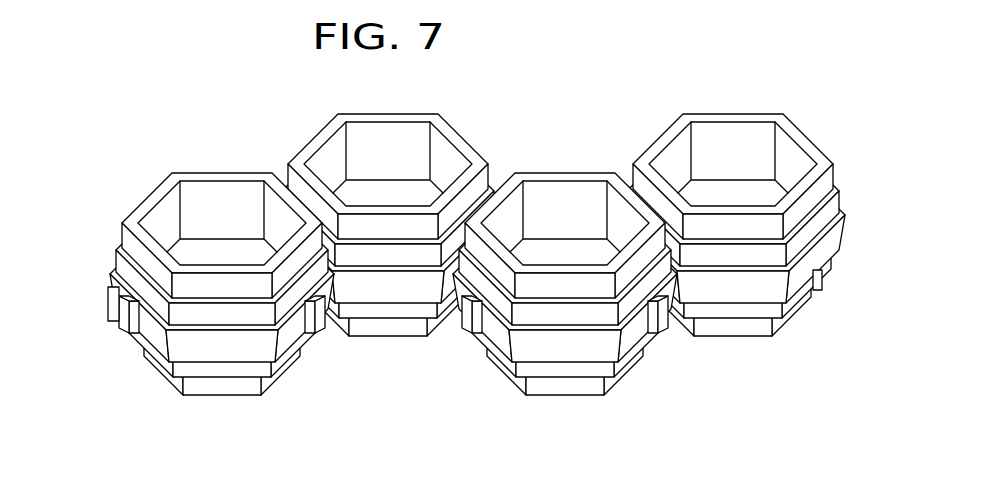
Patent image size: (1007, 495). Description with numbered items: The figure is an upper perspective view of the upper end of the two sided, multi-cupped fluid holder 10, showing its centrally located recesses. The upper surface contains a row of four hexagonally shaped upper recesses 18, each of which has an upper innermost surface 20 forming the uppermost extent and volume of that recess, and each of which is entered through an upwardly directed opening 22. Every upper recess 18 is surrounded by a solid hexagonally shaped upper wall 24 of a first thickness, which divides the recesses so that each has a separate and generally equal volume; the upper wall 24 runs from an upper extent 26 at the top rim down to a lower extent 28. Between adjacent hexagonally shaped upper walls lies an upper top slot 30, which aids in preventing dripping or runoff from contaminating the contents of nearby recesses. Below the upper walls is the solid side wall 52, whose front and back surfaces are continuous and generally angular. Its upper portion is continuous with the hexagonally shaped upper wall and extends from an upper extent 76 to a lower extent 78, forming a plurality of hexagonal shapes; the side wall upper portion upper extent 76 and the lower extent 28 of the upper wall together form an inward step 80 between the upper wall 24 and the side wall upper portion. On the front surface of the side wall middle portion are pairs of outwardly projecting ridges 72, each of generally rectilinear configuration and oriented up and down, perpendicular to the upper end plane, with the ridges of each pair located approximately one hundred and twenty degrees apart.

The two sided, multi-cupped fluid holder 10 is at (442, 259).
The upper recess 18 is at (705, 176).
The upper innermost surface 20 is at (752, 125).
The opening 22 is at (538, 212).
The upper wall 24 is at (477, 151).
The upper extent 26 is at (394, 115).
The lower extent 28 is at (233, 240).
The upper top slot 30 is at (287, 227).
The side wall 52 is at (187, 253).
The outwardly projecting ridges 72 is at (470, 323).
The upper extent of side wall upper portion 76 is at (122, 285).
The lower extent of side wall upper portion 78 is at (112, 292).
The inward step 80 is at (147, 262).